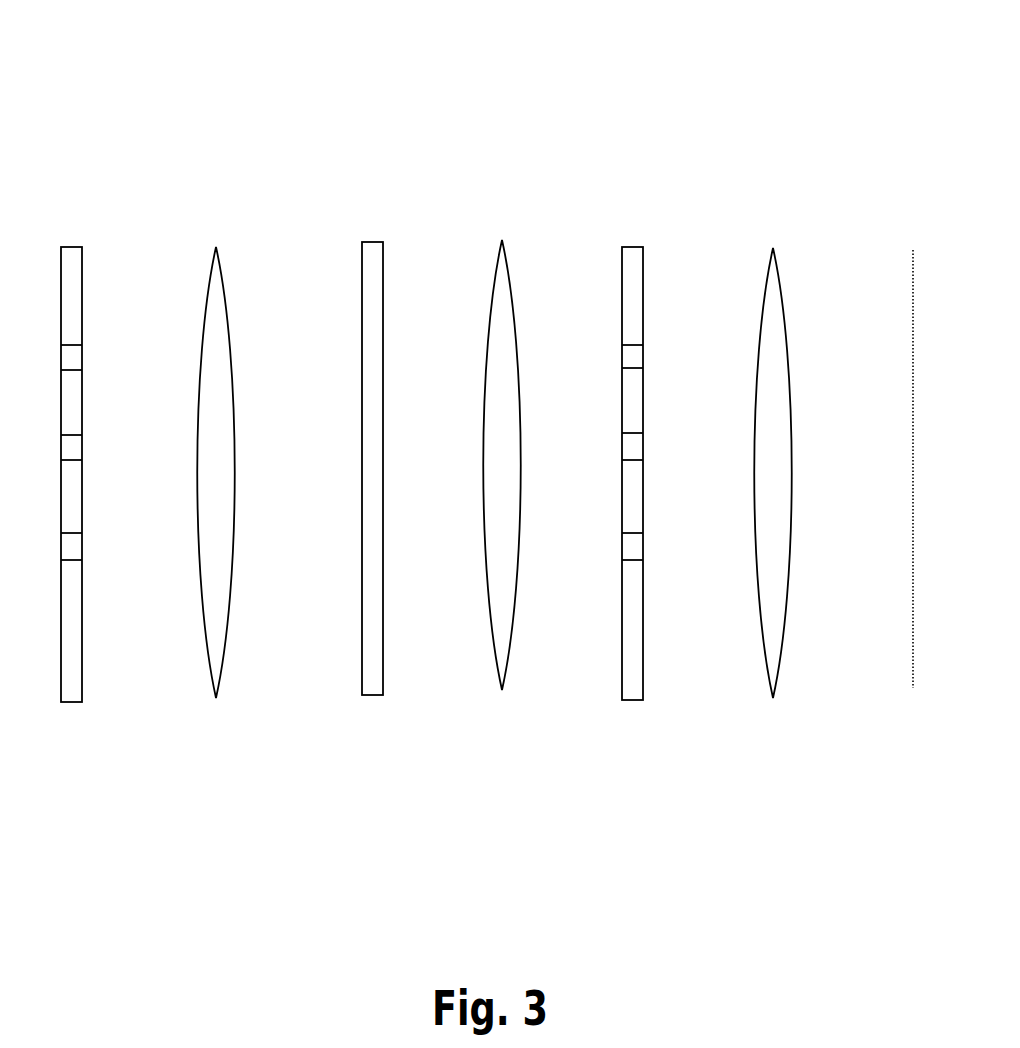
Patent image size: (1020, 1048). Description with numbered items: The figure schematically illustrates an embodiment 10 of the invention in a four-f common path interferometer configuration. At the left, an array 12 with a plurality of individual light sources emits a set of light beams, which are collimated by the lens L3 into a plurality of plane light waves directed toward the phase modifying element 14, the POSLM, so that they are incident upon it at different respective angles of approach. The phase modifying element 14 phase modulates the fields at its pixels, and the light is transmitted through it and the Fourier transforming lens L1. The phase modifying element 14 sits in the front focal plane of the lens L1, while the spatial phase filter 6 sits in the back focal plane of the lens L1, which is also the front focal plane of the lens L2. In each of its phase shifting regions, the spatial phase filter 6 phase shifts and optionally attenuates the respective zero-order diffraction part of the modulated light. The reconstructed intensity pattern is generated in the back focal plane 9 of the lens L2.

The embodiment 10 is at (495, 130).
The array 12 is at (75, 682).
The phase modifying element 14 is at (377, 687).
The spatial phase filter 6 is at (633, 693).
The back focal plane 9 is at (914, 686).
The Fourier transforming lens L1 is at (507, 683).
The lens L2 is at (775, 687).
The lens L3 is at (220, 677).